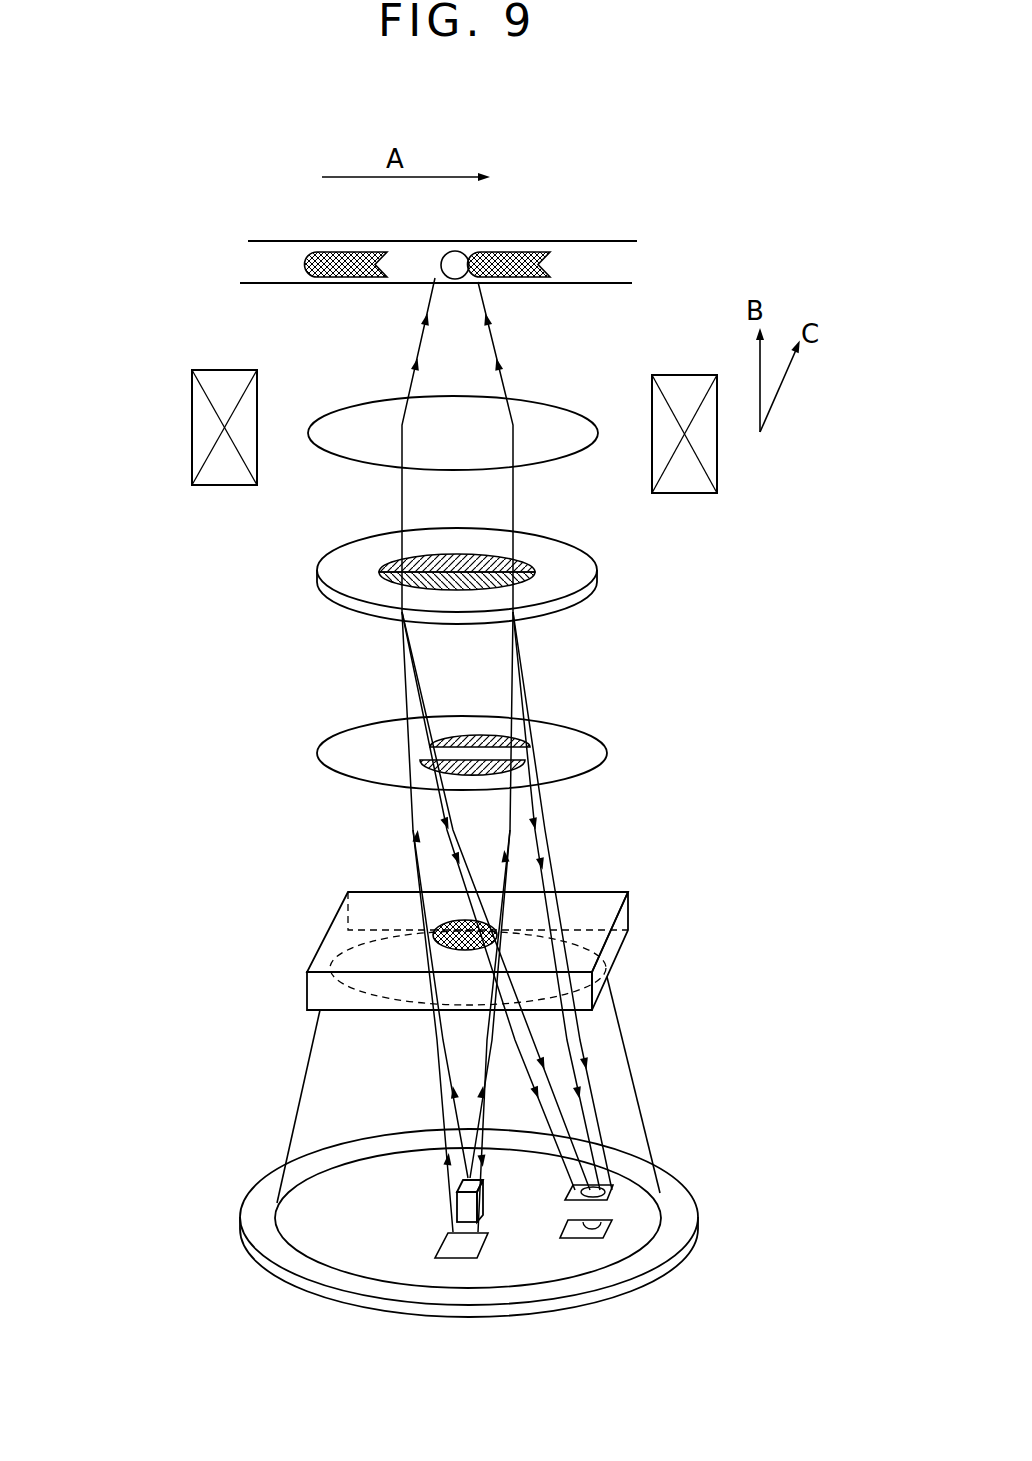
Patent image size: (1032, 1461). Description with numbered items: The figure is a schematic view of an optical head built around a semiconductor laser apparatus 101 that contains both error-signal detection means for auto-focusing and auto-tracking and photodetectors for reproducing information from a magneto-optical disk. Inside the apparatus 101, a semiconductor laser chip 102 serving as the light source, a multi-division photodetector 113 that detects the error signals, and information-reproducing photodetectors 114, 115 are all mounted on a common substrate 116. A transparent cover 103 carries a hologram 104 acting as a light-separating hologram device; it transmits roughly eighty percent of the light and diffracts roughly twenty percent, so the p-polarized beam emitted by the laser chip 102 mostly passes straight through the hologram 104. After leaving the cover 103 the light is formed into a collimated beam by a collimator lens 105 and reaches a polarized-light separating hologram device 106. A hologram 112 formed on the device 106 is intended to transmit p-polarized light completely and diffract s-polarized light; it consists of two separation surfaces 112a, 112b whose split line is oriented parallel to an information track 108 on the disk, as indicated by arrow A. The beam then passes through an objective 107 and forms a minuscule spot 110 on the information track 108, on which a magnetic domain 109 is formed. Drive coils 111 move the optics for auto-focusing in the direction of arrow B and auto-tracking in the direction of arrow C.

The semiconductor laser apparatus 101 is at (281, 1082).
The semiconductor laser chip 102 is at (463, 1208).
The transparent cover 103 is at (595, 900).
The hologram 104 is at (455, 920).
The collimator lens 105 is at (592, 762).
The polarized-light separating hologram device 106 is at (580, 568).
The objective 107 is at (548, 418).
The information track 108 is at (607, 250).
The magnetic domain 109 is at (503, 253).
The spot 110 is at (453, 257).
The drive coils 111 is at (198, 455).
The hologram 112 is at (360, 571).
The separation surface 112a is at (420, 555).
The separation surface 112b is at (437, 587).
The multi-division photodetector 113 is at (463, 1250).
The photodetector 114 is at (617, 1193).
The photodetector 115 is at (613, 1229).
The common substrate 116 is at (275, 1167).